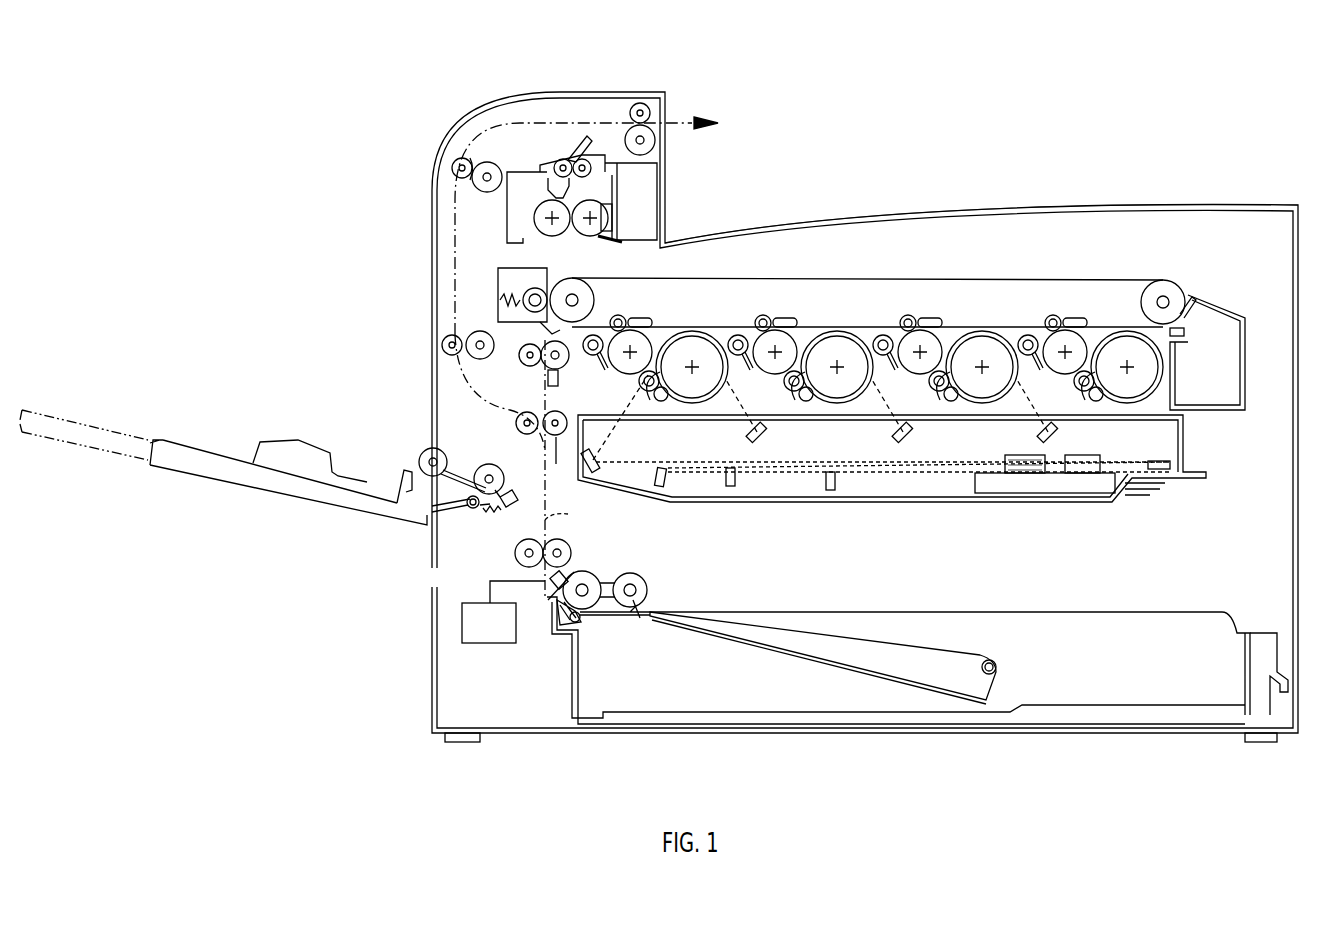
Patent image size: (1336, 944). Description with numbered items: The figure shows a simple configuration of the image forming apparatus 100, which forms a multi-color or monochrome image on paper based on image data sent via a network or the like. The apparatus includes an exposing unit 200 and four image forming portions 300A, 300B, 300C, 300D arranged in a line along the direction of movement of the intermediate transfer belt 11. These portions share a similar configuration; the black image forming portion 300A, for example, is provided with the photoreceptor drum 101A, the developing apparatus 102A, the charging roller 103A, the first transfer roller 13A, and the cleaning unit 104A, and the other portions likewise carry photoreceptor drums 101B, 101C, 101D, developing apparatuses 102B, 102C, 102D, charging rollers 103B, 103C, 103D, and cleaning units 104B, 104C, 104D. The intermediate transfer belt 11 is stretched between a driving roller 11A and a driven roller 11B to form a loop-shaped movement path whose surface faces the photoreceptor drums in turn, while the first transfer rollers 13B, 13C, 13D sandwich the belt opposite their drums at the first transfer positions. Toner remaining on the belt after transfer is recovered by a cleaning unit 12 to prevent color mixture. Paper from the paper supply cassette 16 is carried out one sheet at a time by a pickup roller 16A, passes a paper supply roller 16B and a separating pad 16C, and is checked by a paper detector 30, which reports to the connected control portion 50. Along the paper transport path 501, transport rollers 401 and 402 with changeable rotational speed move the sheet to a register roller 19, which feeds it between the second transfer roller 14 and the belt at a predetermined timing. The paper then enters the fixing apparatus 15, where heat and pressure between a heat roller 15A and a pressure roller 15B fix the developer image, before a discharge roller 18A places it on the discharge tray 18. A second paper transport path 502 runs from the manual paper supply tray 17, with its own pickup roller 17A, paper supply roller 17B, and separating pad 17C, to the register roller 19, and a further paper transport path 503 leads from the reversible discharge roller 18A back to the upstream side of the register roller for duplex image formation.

The image forming apparatus 100 is at (1279, 153).
The intermediate transfer belt 11 is at (1163, 282).
The driving roller 11A is at (575, 282).
The driven roller 11B is at (1188, 298).
The cleaning unit 12 is at (1240, 318).
The first transfer roller 13A is at (622, 313).
The first transfer roller 13B is at (763, 314).
The first transfer roller 13C is at (908, 314).
The first transfer roller 13D is at (1053, 314).
The second transfer roller 14 is at (518, 288).
The fixing apparatus 15 is at (581, 151).
The heat roller 15A is at (600, 210).
The pressure roller 15B is at (550, 202).
The paper supply cassette 16 is at (917, 631).
The pickup roller 16A is at (636, 582).
The paper supply roller 16B is at (592, 578).
The separating pad 16C is at (585, 620).
The manual paper supply tray 17 is at (269, 464).
The pickup roller 17A is at (424, 457).
The paper supply roller 17B is at (484, 464).
The separating pad 17C is at (468, 506).
The discharge tray 18 is at (783, 240).
The discharge roller 18A is at (642, 103).
The register roller 19 is at (528, 368).
The paper detector 30 is at (598, 578).
The control portion 50 is at (516, 645).
The photoreceptor drum 101A is at (633, 345).
The photoreceptor drum 101B is at (778, 345).
The photoreceptor drum 101C is at (923, 345).
The photoreceptor drum 101D is at (1068, 345).
The developing apparatus 102A is at (692, 340).
The developing apparatus 102B is at (837, 340).
The developing apparatus 102C is at (982, 340).
The developing apparatus 102D is at (1127, 340).
The charging roller 103A is at (632, 395).
The charging roller 103B is at (744, 410).
The charging roller 103C is at (890, 410).
The charging roller 103D is at (1035, 410).
The cleaning unit 104A is at (593, 356).
The cleaning unit 104B is at (736, 335).
The cleaning unit 104C is at (881, 335).
The cleaning unit 104D is at (1026, 335).
The exposing unit 200 is at (1183, 440).
The image forming portion 300A is at (666, 323).
The image forming portion 300B is at (806, 308).
The image forming portion 300C is at (951, 308).
The image forming portion 300D is at (1096, 308).
The transport roller 401 is at (566, 552).
The transport roller 402 is at (564, 461).
The paper transport path 501 is at (575, 502).
The paper transport path 502 is at (527, 426).
The paper transport path 503 is at (450, 296).